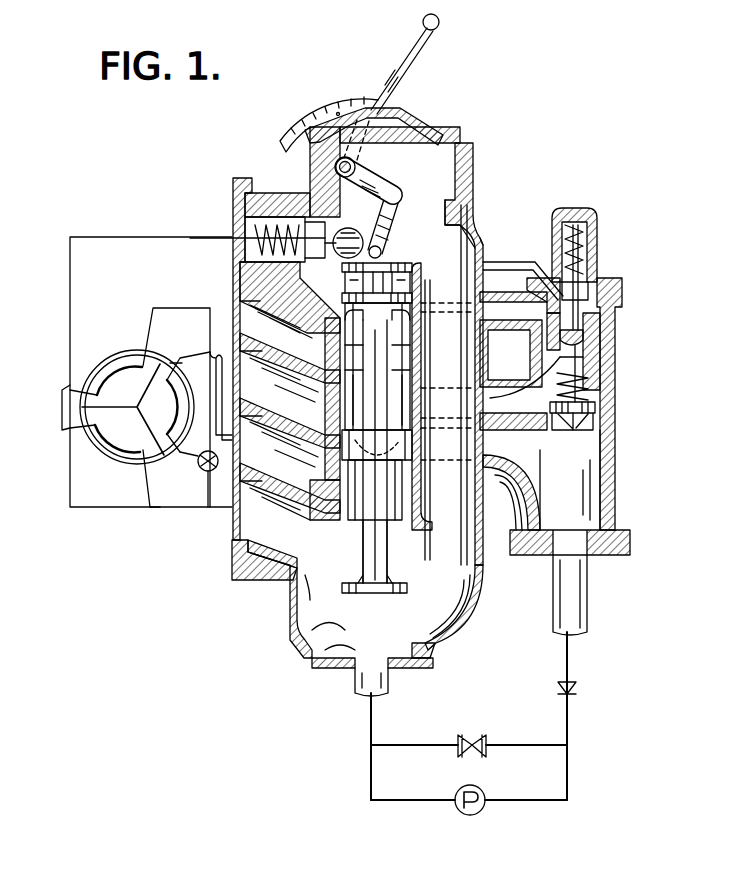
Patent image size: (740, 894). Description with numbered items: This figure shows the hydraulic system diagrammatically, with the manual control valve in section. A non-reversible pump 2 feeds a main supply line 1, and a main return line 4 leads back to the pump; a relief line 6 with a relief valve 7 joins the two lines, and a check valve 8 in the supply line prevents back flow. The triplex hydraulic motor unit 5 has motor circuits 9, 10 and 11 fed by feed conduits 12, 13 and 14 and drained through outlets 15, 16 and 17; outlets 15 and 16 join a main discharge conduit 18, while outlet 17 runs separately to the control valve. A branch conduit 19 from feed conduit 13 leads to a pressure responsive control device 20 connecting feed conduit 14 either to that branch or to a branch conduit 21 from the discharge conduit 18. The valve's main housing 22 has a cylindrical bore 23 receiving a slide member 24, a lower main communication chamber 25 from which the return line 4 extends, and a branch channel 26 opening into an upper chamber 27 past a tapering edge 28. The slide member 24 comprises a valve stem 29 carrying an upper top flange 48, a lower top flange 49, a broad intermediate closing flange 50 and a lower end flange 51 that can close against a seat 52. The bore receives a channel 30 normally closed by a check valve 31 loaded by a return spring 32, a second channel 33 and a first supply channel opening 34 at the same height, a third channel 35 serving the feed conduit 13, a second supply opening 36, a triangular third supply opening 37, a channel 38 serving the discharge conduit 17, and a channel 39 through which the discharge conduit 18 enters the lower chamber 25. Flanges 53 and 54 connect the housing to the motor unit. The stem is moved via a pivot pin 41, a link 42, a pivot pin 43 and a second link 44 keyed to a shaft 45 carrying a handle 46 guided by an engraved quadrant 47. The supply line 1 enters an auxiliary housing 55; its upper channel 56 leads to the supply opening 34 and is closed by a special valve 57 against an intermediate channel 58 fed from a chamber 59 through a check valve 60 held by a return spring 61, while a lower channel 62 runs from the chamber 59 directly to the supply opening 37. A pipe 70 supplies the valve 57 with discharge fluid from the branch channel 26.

The main supply line 1 is at (567, 724).
The non-reversible pump 2 is at (462, 813).
The main return line 4 is at (369, 722).
The hydraulic motor unit 5 is at (108, 357).
The relief line 6 is at (425, 746).
The relief valve 7 is at (472, 742).
The check valve 8 is at (577, 690).
The motor circuit 9 is at (122, 463).
The motor circuit 10 is at (119, 385).
The motor circuit 11 is at (180, 402).
The feed conduit 12 is at (152, 237).
The feed conduit 13 is at (167, 308).
The feed conduit 14 is at (188, 456).
The outlet 15 is at (143, 482).
The outlet 16 is at (93, 507).
The outlet 17 is at (175, 367).
The main discharge conduit 18 is at (183, 507).
The branch conduit 19 is at (216, 330).
The pressure responsive control device 20 is at (198, 466).
The branch conduit 21 is at (208, 492).
The main housing 22 is at (290, 610).
The cylindrical bore 23 is at (425, 342).
The slide member 24 is at (398, 567).
The main communication chamber 25 is at (300, 637).
The branch channel 26 is at (478, 570).
The upper chamber 27 is at (435, 175).
The edge 28 is at (412, 280).
The valve stem 29 is at (363, 562).
The channel 30 is at (350, 238).
The check valve 31 is at (295, 212).
The return spring 32 is at (245, 224).
The second channel 33 is at (240, 280).
The first supply channel opening 34 is at (400, 319).
The third channel 35 is at (255, 312).
The second supply opening 36 is at (400, 392).
The third supply opening 37 is at (402, 468).
The channel 38 is at (320, 505).
The channel 39 is at (298, 566).
The pivot pin 41 is at (478, 234).
The link 42 is at (405, 226).
The pivot pin 43 is at (399, 196).
The second link 44 is at (353, 175).
The shaft 45 is at (348, 166).
The handle 46 is at (430, 30).
The quadrant 47 is at (323, 98).
The upper top flange 48 is at (412, 266).
The lower top flange 49 is at (412, 300).
The intermediate closing flange 50 is at (415, 450).
The lower end flange 51 is at (408, 590).
The seat 52 is at (412, 522).
The flange 53 is at (232, 555).
The flange 54 is at (233, 188).
The auxiliary housing 55 is at (580, 368).
The upper channel 56 is at (490, 305).
The valve 57 is at (600, 282).
The intermediate channel 58 is at (580, 345).
The chamber 59 is at (592, 473).
The check valve 60 is at (595, 427).
The return spring 61 is at (590, 390).
The lower channel 62 is at (510, 462).
The pipe 70 is at (500, 262).